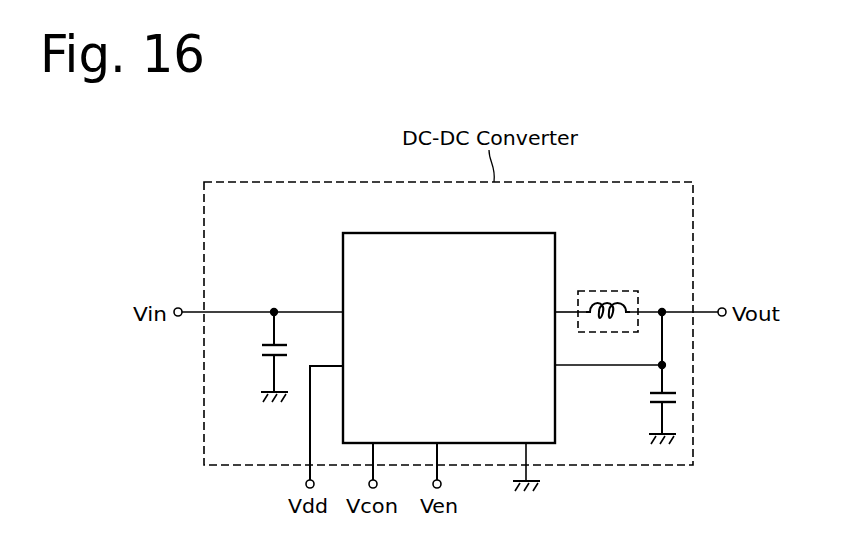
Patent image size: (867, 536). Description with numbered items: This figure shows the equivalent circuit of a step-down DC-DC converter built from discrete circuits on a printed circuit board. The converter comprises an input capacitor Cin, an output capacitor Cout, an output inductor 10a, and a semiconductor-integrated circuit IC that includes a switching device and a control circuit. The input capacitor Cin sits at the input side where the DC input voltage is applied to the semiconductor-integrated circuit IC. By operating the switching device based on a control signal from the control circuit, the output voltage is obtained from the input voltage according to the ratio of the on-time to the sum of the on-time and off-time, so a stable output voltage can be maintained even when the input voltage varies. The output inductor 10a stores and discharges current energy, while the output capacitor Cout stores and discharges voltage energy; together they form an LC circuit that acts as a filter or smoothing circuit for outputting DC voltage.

The output inductor Lout 10a is at (598, 291).
The semiconductor-integrated circuit IC is at (425, 240).
The input capacitor Cin is at (252, 357).
The output capacitor Cout is at (635, 404).